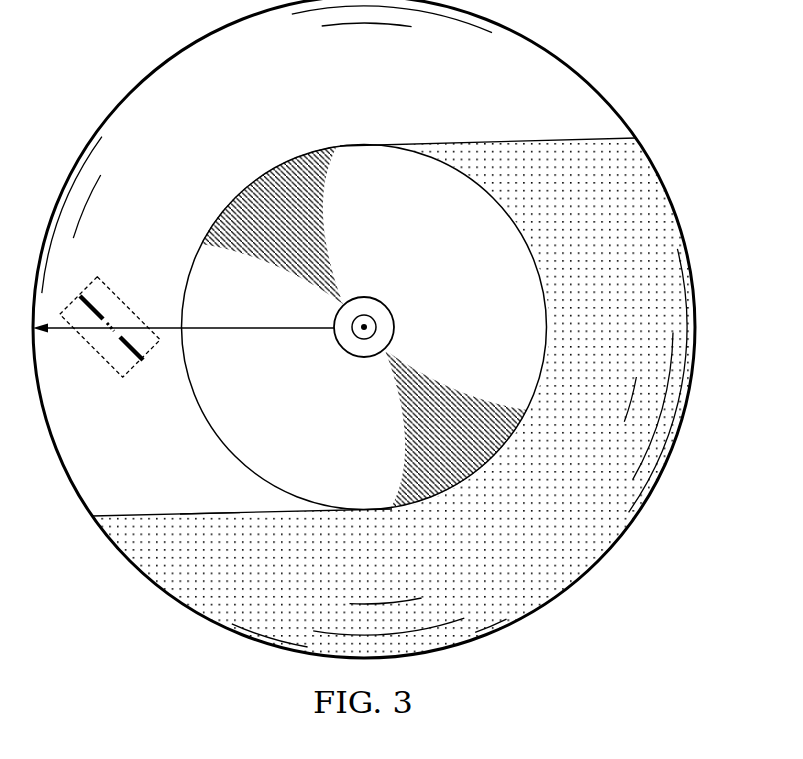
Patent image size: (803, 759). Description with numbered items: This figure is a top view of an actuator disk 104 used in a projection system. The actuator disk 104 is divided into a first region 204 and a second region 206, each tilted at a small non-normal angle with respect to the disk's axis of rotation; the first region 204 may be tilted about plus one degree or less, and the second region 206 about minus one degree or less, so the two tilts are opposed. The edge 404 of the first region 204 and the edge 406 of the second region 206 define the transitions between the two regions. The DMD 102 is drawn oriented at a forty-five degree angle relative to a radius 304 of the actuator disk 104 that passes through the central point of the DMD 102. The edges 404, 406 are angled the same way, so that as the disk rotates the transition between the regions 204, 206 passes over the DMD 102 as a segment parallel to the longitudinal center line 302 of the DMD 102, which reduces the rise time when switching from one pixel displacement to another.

The actuator disk 104 is at (147, 61).
The DMD 102 is at (116, 291).
The first region 204 is at (262, 112).
The second region 206 is at (543, 530).
The longitudinal center line 302 is at (133, 363).
The radius 304 is at (237, 329).
The edge 404 is at (168, 513).
The edge 406 is at (207, 515).